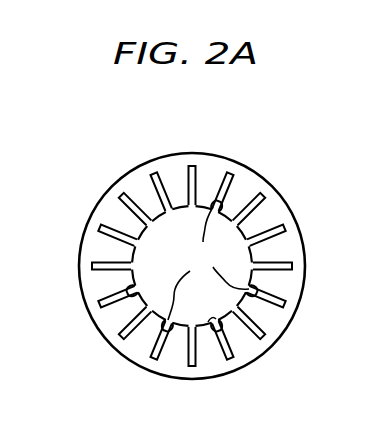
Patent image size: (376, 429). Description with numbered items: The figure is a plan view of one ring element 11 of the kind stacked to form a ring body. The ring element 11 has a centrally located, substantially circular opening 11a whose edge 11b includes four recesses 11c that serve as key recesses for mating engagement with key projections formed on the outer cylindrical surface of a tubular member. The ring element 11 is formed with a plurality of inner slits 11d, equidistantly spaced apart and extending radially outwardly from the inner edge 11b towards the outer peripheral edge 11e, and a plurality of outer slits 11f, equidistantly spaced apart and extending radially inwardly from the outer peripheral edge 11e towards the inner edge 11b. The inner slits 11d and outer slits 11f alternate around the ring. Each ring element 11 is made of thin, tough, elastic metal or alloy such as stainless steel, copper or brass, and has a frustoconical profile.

The ring element 11 is at (293, 285).
The circular opening 11a is at (97, 308).
The inner edge 11b is at (252, 356).
The recesses 11c is at (137, 245).
The inner slits 11d is at (137, 340).
The outer peripheral edge 11e is at (302, 238).
The outer slits 11f is at (152, 172).